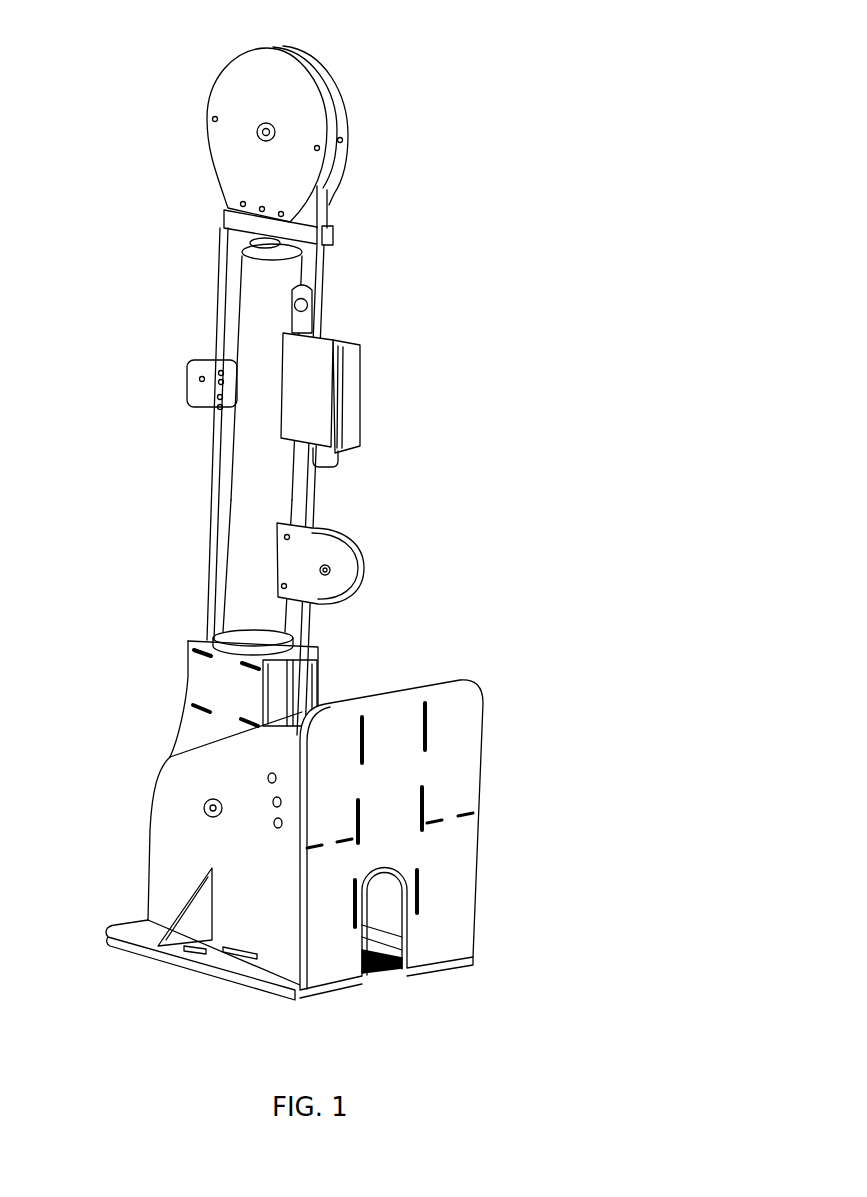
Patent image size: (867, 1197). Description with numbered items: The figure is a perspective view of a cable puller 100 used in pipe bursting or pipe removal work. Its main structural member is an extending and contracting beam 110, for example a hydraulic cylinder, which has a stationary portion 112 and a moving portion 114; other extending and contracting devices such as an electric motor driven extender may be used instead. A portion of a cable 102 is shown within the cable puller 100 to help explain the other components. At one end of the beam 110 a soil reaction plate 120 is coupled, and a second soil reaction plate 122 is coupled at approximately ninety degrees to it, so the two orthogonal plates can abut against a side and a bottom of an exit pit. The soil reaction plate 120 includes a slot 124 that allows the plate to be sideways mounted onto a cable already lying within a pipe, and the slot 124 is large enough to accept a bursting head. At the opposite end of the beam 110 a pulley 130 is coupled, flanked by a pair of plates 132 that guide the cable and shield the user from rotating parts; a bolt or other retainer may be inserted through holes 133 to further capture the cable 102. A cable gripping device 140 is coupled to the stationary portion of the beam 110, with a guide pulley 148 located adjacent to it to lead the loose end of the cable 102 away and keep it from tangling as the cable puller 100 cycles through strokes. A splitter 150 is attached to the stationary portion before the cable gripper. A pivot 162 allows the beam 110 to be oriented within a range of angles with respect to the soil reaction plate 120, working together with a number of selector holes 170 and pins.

The cable puller 100 is at (540, 990).
The cable 102 is at (215, 523).
The extending and contracting beam 110 is at (245, 485).
The stationary portion 112 is at (242, 595).
The moving portion 114 is at (227, 228).
The soil reaction plate 120 is at (445, 742).
The second soil reaction plate 122 is at (207, 952).
The slot 124 is at (390, 900).
The pulley 130 is at (335, 127).
The pair of plates 132 is at (338, 92).
The holes 133 is at (215, 119).
The cable gripping device 140 is at (365, 372).
The guide pulley 148 is at (352, 570).
The splitter 150 is at (175, 373).
The pivot 162 is at (205, 800).
The selector holes 170 is at (270, 824).